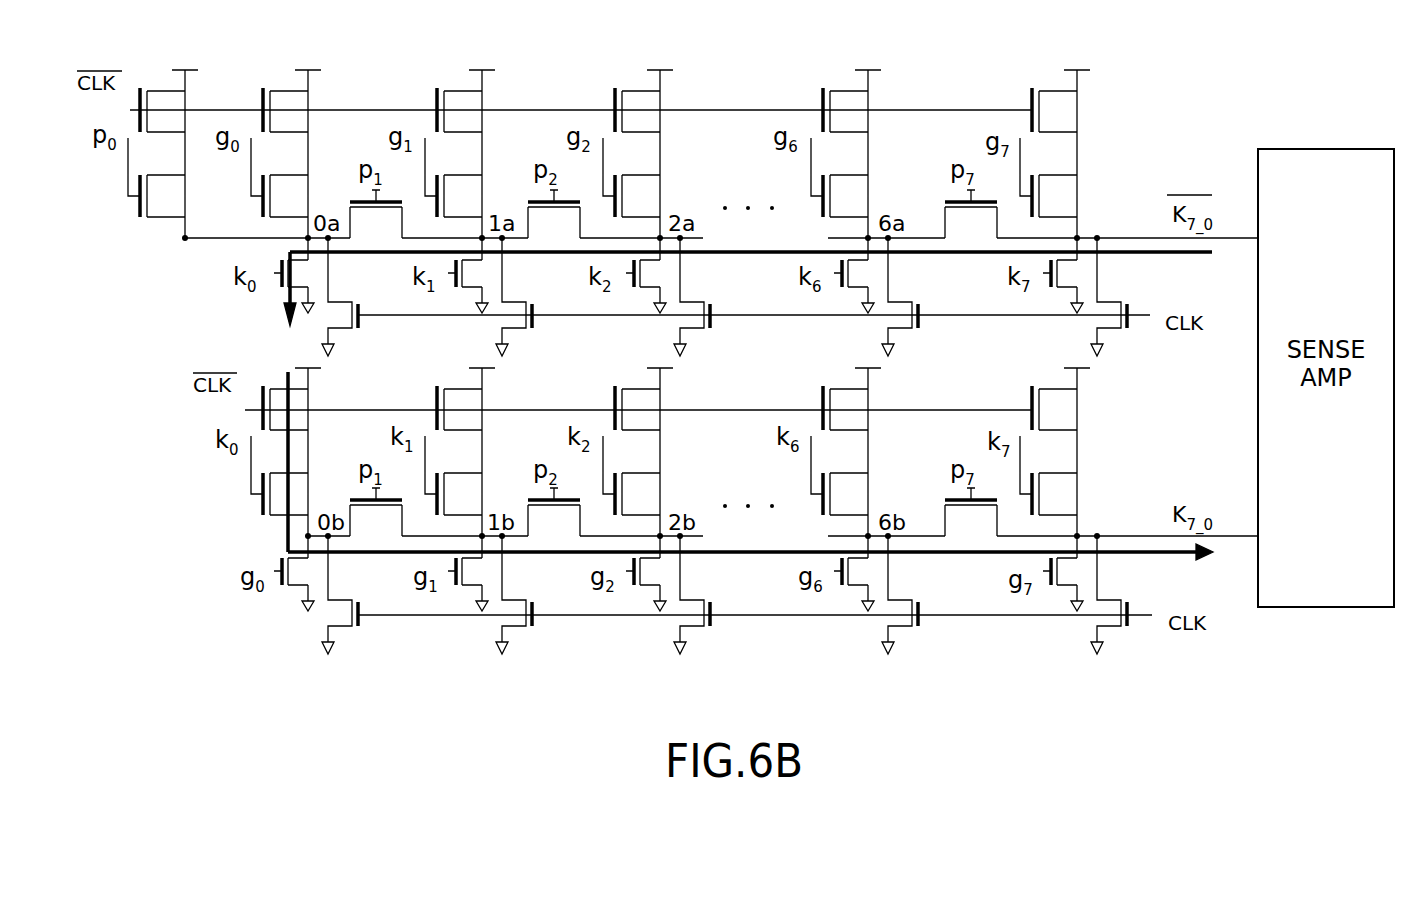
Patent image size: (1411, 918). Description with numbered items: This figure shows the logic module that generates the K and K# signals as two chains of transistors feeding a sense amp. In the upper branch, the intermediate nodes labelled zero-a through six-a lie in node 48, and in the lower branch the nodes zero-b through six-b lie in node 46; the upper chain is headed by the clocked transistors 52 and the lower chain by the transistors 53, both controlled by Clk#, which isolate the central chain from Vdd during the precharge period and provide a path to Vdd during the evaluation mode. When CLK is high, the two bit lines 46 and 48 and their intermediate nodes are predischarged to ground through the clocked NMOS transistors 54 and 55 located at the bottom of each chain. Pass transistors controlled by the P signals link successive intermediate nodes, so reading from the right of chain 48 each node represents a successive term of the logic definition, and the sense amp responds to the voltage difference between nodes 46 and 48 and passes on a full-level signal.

The clocked transistor 52 is at (1060, 90).
The node 48 is at (1120, 238).
The clocked NMOS transistor 54 is at (1110, 330).
The transistor controlled by Clk# 53 is at (1080, 413).
The node 46 is at (1120, 536).
The clocked NMOS transistor 55 is at (1105, 630).